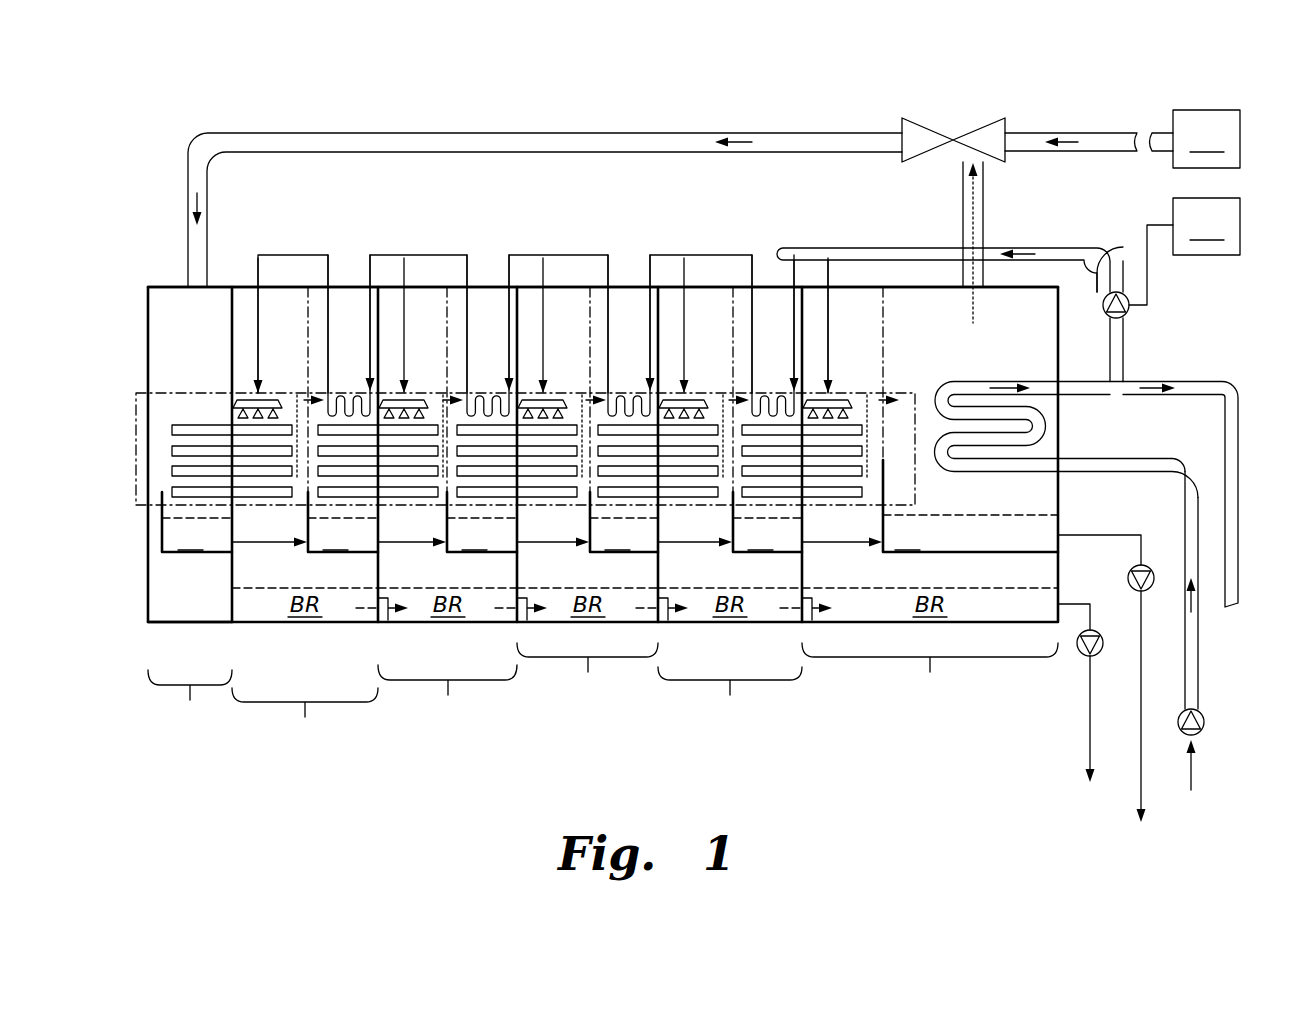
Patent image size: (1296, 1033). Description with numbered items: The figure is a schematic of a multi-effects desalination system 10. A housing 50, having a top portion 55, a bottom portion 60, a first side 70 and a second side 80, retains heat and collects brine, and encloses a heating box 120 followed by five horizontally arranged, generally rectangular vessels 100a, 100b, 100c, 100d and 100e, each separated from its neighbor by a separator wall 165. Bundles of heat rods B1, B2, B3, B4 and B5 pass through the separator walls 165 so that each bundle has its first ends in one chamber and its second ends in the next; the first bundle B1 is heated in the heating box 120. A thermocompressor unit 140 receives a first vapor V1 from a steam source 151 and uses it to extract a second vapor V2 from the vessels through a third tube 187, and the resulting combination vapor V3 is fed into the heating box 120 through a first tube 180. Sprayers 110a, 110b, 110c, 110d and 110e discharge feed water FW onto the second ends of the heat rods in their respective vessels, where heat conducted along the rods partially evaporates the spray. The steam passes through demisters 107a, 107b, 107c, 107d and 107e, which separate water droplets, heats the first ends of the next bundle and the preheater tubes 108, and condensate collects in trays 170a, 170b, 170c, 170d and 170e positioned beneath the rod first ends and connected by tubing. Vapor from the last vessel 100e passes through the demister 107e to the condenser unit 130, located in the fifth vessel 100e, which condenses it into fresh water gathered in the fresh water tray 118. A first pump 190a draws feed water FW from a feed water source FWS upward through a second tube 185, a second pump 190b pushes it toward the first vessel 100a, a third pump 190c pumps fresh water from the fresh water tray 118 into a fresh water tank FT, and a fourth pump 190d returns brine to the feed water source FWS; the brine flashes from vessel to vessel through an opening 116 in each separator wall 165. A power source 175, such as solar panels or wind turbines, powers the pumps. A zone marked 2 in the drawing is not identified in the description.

The multi-effects desalination system 10 is at (162, 77).
The heat exchange zone 2 is at (136, 393).
The housing 50 is at (164, 246).
The top portion 55 is at (166, 287).
The bottom portion 60 is at (190, 623).
The first side 70 is at (136, 452).
The second side 80 is at (1062, 491).
The first vessel 100a is at (305, 718).
The second vessel 100b is at (447, 695).
The third vessel 100c is at (587, 672).
The fourth vessel 100d is at (730, 696).
The fifth vessel 100e is at (930, 672).
The first demister 107a is at (292, 308).
The second demister 107b is at (436, 308).
The third demister 107c is at (579, 308).
The fourth demister 107d is at (720, 308).
The fifth demister 107e is at (872, 308).
The preheater tubes 108 is at (329, 352).
The first sprayer 110a is at (244, 380).
The second sprayer 110b is at (388, 378).
The third sprayer 110c is at (527, 378).
The fourth sprayer 110d is at (668, 378).
The fifth sprayer 110e is at (812, 378).
The opening 116 is at (408, 598).
The fresh water tray 118 is at (920, 553).
The heating box 120 is at (190, 700).
The condenser unit 130 is at (932, 377).
The thermocompressor unit 140 is at (931, 118).
The steam source 151 is at (1206, 139).
The separator wall 165 is at (230, 298).
The first tray 170a is at (190, 552).
The second tray 170b is at (355, 553).
The third tray 170c is at (460, 553).
The fourth tray 170d is at (595, 553).
The fifth tray 170e is at (737, 553).
The power source 175 is at (1184, 251).
The first tube 180 is at (552, 132).
The second tube 185 is at (1199, 676).
The third tube 187 is at (985, 183).
The first pump 190a is at (1205, 721).
The second pump 190b is at (1129, 312).
The third pump 190c is at (1128, 577).
The fourth pump 190d is at (1082, 657).
The first bundle of heat rods B1 is at (188, 412).
The second bundle of heat rods B2 is at (396, 518).
The third bundle of heat rods B3 is at (536, 518).
The fourth bundle of heat rods B4 is at (676, 518).
The fifth bundle of heat rods B5 is at (818, 518).
The first vapor V1 is at (1062, 141).
The second vapor V2 is at (976, 206).
The combination vapor V3 is at (741, 133).
The feed water FW is at (1208, 643).
The feed water source FWS is at (1142, 803).
The fresh water tank FT is at (1141, 840).